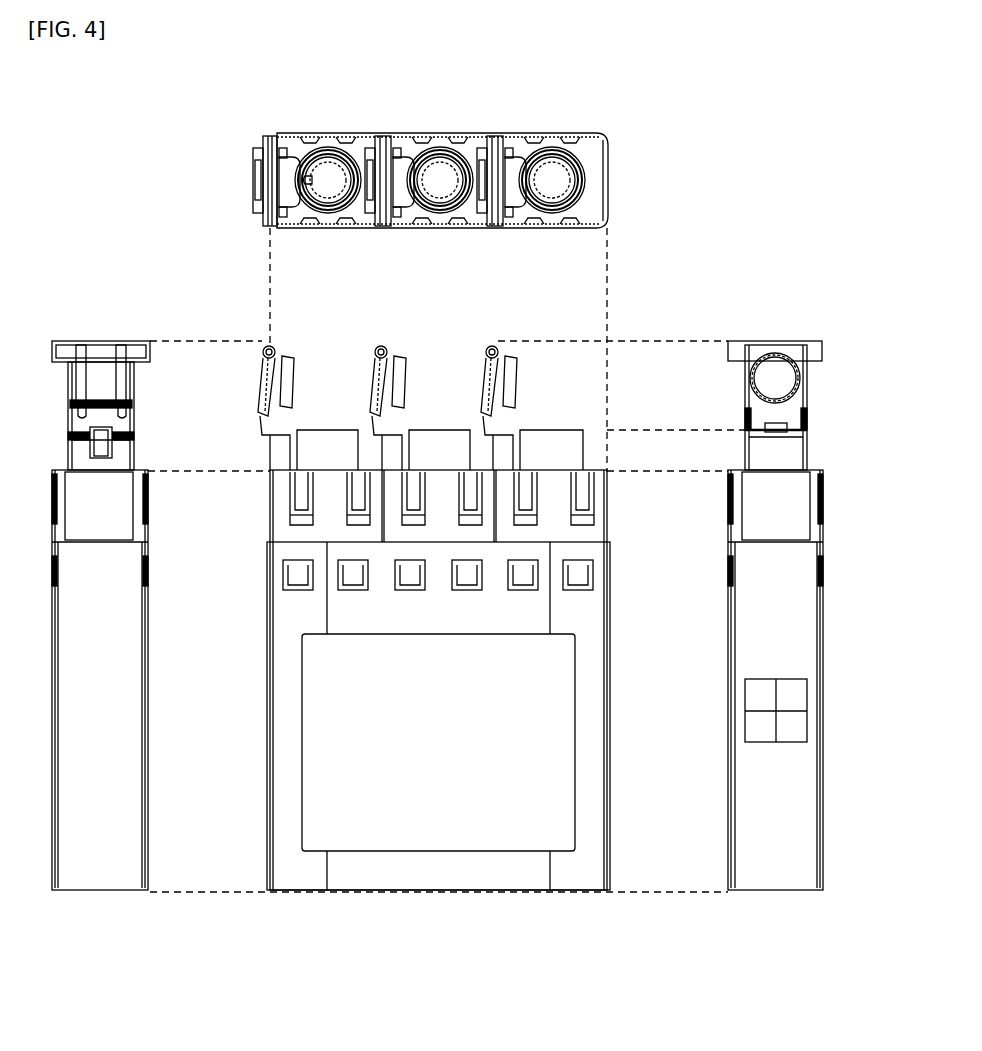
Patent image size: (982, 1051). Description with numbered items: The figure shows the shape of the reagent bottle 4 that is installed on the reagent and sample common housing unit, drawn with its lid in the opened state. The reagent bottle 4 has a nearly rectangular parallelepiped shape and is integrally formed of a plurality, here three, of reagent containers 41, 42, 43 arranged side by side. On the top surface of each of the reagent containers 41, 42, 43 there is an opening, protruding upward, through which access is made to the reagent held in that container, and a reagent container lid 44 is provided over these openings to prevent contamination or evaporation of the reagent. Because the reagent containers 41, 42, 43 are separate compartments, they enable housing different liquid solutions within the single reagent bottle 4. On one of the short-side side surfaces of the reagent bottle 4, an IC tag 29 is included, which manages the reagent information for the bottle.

The reagent bottle 4 is at (237, 108).
The reagent container lid 44 is at (765, 343).
The reagent container 43 is at (319, 470).
The reagent container 42 is at (436, 470).
The reagent container 41 is at (546, 470).
The IC tag 29 is at (803, 693).